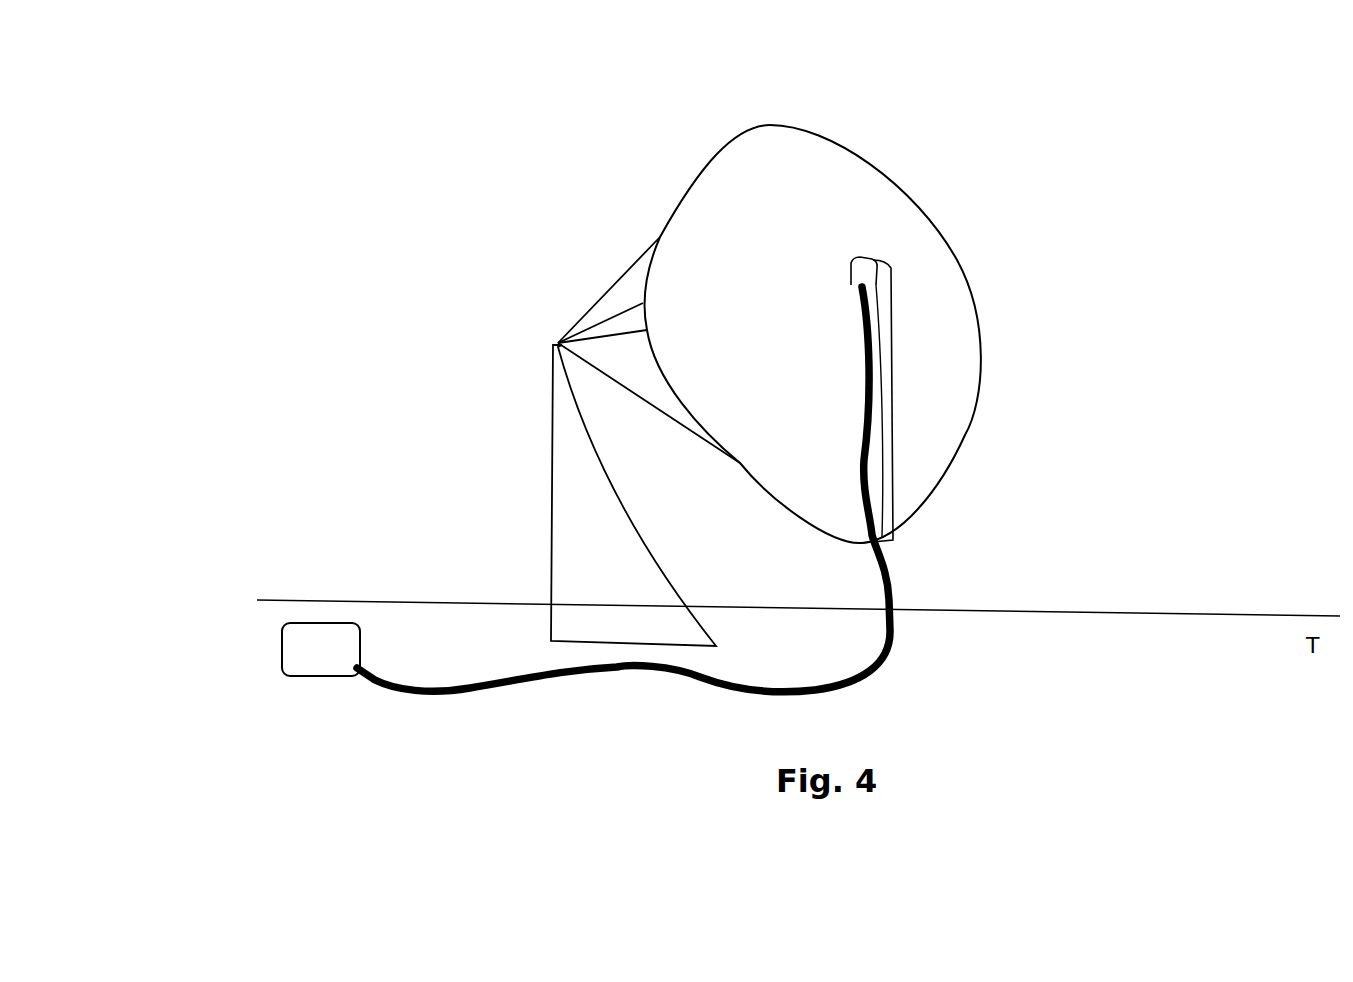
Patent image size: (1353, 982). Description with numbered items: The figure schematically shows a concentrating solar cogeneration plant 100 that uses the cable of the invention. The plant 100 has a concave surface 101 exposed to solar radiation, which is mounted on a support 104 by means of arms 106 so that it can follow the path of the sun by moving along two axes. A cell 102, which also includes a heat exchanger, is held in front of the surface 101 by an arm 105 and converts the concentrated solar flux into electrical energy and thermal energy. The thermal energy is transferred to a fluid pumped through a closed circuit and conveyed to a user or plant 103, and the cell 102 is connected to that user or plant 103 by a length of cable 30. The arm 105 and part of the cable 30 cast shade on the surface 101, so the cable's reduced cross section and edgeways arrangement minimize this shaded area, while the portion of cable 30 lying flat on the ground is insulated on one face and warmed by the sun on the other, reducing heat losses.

The plant 100 is at (452, 172).
The surface exposed to solar radiation 101 is at (771, 226).
The cell 102 is at (858, 257).
The user or plant 103 is at (257, 672).
The support 104 is at (573, 508).
The arm 105 is at (888, 523).
The arms 106 is at (605, 283).
The cable 30 is at (506, 706).